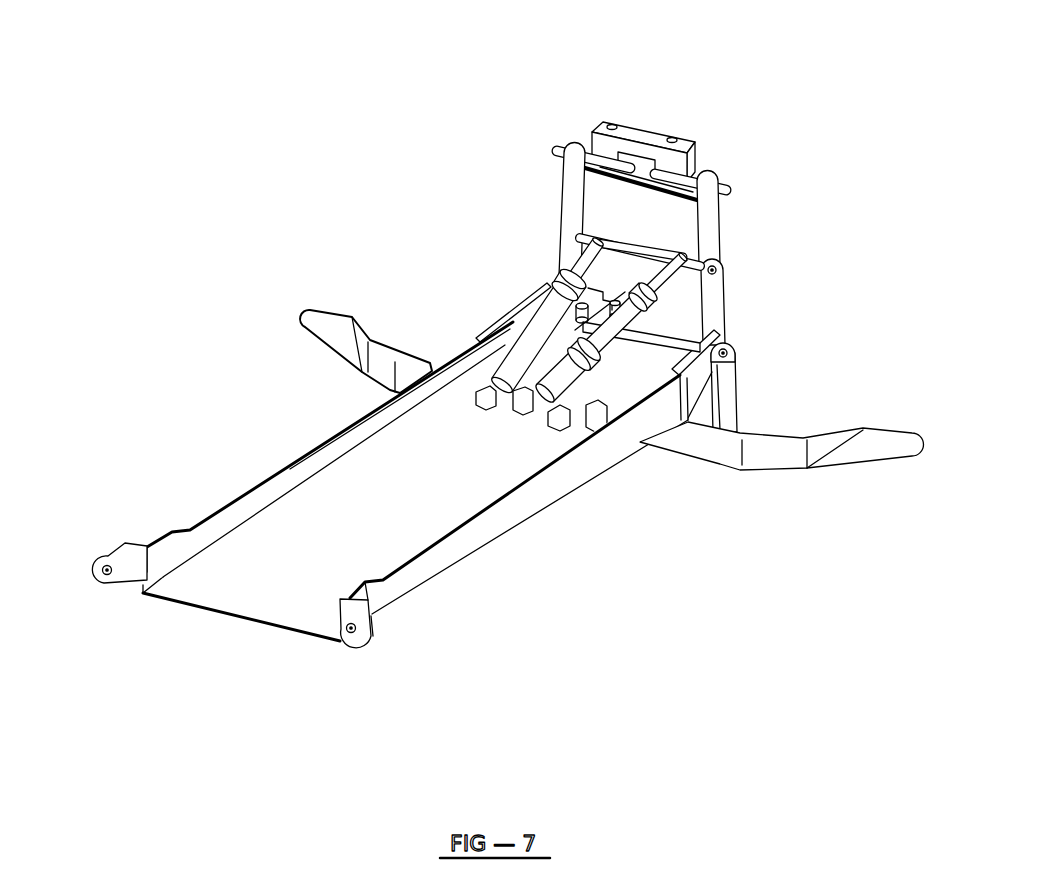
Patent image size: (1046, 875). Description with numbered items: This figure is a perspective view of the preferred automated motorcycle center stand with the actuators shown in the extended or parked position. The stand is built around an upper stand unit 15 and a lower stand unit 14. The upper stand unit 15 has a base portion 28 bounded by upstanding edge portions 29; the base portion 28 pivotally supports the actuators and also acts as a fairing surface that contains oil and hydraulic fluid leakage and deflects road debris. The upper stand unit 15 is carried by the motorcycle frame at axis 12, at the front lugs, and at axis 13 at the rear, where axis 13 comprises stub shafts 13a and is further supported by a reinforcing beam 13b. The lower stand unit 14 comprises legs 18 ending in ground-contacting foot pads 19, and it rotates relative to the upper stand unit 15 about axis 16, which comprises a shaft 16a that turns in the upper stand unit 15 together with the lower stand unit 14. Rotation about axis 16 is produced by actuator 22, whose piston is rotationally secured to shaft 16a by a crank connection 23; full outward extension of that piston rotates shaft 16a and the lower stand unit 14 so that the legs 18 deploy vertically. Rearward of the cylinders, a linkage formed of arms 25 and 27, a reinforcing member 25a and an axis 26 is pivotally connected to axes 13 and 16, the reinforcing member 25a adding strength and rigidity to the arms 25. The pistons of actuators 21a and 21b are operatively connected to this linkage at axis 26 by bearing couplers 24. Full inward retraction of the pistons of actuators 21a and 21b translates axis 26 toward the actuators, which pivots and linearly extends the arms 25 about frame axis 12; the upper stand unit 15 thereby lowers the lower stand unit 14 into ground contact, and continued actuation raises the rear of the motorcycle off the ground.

The axis 12 is at (352, 629).
The axis 13 is at (626, 100).
The stub shafts 13a is at (726, 183).
The reinforcing beam 13b is at (648, 128).
The lower stand unit 14 is at (717, 491).
The upper stand unit 15 is at (543, 586).
The axis 16 is at (731, 352).
The shaft 16a is at (690, 323).
The legs 18 is at (728, 410).
The ground-contacting foot pads 19 is at (887, 447).
The actuator 21a is at (517, 318).
The actuator 21b is at (600, 378).
The actuator 22 is at (560, 415).
The crank connection 23 is at (560, 282).
The bearing couplers 24 is at (598, 246).
The arms 25 is at (712, 230).
The reinforcing member 25a is at (577, 180).
The axis 26 is at (722, 268).
The arms 27 is at (713, 298).
The base portion 28 is at (257, 585).
The upstanding edge portions 29 is at (310, 467).